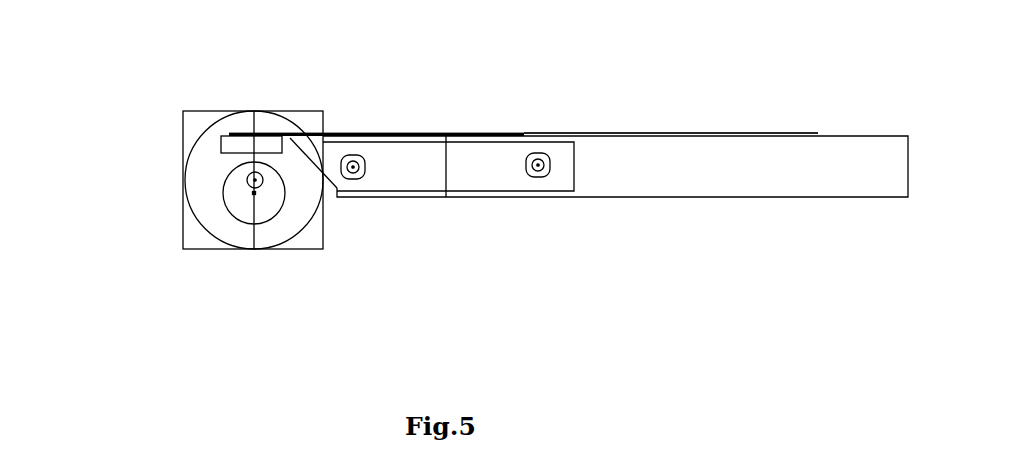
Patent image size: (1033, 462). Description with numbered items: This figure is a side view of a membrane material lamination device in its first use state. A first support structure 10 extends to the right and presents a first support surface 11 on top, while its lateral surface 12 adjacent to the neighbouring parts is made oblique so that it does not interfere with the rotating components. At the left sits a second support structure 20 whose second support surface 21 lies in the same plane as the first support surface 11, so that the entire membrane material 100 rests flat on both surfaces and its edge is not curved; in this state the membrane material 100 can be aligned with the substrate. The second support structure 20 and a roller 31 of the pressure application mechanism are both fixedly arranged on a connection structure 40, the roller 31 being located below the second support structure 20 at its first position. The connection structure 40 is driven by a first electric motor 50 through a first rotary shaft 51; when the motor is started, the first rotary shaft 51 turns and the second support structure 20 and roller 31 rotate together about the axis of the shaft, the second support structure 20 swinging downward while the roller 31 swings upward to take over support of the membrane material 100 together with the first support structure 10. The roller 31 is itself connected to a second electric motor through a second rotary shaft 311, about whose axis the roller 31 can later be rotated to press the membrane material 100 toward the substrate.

The first support structure 10 is at (790, 171).
The first support surface 11 is at (850, 129).
The lateral surface 12 is at (327, 167).
The second support structure 20 is at (220, 138).
The second support surface 21 is at (222, 126).
The roller 31 is at (248, 196).
The second rotary shaft 311 is at (253, 194).
The connection structure 40 is at (293, 212).
The first electric motor 50 is at (312, 119).
The first rotary shaft 51 is at (246, 176).
The membrane material 100 is at (473, 129).